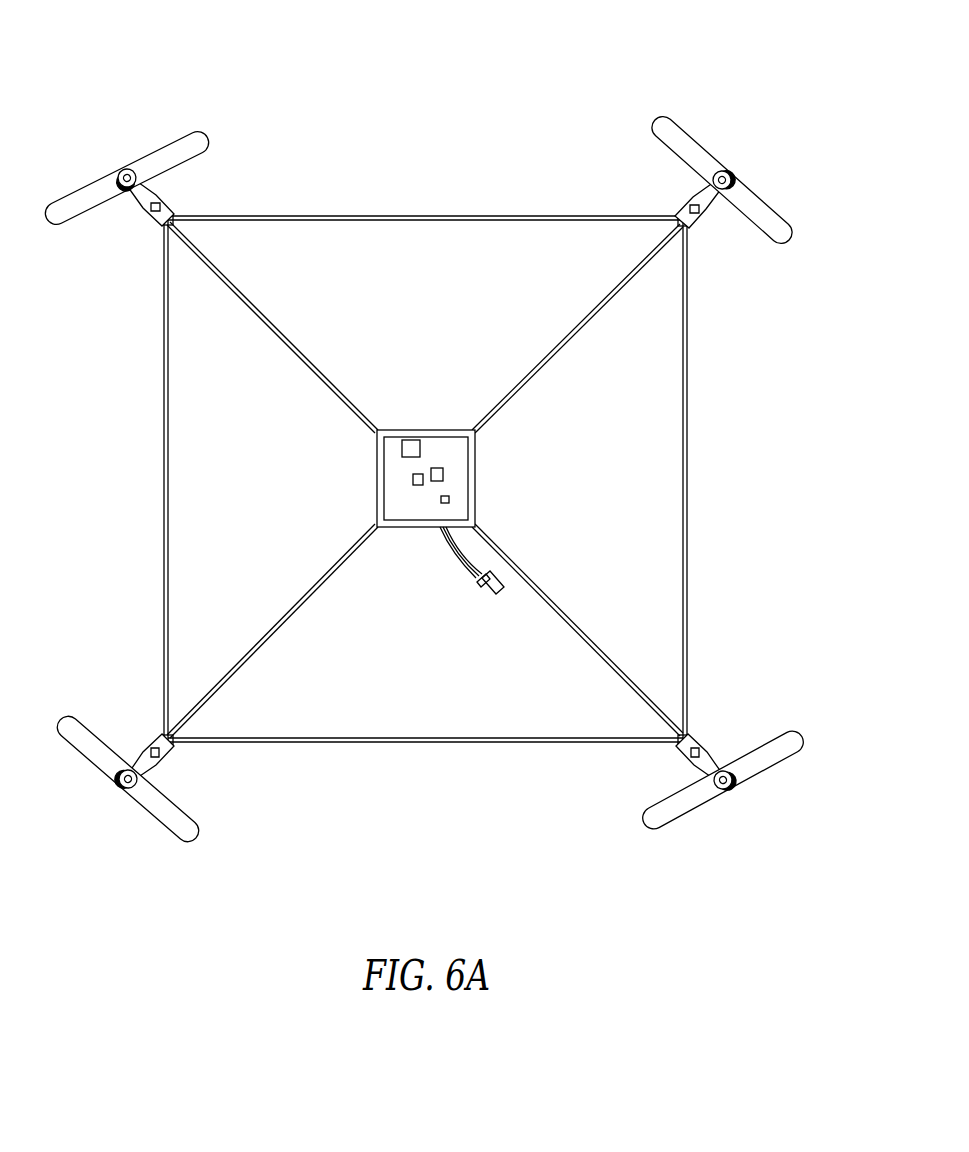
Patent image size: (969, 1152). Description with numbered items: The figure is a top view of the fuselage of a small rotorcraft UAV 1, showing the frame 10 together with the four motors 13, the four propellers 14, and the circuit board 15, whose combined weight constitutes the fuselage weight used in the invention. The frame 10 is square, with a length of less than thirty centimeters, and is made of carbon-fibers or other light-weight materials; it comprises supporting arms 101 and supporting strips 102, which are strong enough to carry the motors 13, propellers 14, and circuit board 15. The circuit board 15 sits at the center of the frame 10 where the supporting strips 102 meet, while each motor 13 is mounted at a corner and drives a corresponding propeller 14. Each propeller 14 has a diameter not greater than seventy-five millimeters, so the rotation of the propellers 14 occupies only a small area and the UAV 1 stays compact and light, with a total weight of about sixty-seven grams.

The UAV 1 is at (797, 83).
The frame 10 is at (475, 211).
The supporting arms 101 is at (362, 217).
The supporting strips 102 is at (330, 388).
The motors 13 is at (148, 198).
The propellers 14 is at (170, 152).
The circuit board 15 is at (435, 442).